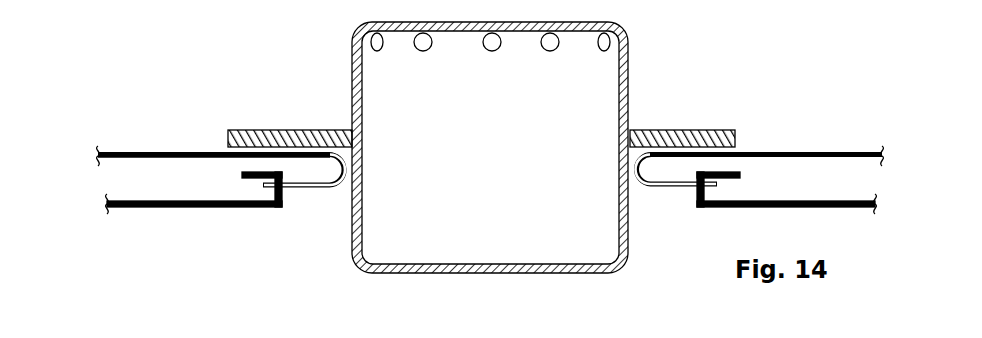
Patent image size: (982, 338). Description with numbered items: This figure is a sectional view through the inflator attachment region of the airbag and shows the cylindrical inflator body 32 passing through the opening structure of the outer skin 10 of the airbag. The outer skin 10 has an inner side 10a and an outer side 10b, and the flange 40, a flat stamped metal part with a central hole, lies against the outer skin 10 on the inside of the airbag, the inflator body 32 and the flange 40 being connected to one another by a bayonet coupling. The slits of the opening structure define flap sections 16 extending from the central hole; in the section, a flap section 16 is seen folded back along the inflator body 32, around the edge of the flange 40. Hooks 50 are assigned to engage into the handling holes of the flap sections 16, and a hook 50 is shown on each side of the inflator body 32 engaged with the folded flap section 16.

The outer skin of airbag 10 is at (798, 155).
The inner side 10a is at (158, 152).
The outer side 10b is at (190, 163).
The flap section 16 is at (305, 188).
The inflator body 32 is at (630, 77).
The flange 40 is at (305, 138).
The hook 50 is at (148, 203).